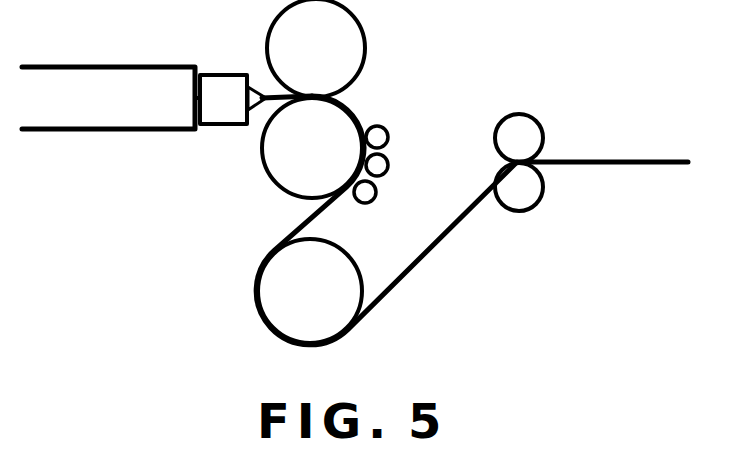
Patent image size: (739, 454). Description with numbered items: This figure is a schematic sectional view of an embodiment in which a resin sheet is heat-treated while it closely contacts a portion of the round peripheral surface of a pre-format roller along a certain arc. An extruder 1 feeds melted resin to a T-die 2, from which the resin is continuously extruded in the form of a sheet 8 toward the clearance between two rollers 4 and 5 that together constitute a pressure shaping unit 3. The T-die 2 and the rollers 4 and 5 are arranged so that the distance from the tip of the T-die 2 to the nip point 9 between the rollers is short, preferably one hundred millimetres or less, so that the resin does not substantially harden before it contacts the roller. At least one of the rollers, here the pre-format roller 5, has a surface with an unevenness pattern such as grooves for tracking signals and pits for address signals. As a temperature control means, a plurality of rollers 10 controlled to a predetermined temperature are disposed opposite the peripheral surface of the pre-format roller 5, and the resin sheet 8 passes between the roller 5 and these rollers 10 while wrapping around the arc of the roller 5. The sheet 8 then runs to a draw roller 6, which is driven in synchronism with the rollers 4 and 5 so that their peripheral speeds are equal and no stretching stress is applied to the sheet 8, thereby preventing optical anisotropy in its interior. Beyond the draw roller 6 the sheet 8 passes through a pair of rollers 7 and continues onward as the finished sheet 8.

The extruder 1 is at (98, 117).
The T-die 2 is at (258, 118).
The pressure shaping unit 3 is at (375, 42).
The roller 4 is at (345, 42).
The pre-format roller 5 is at (287, 177).
The draw roller 6 is at (337, 310).
The take-off rollers 7 is at (528, 135).
The resin sheet 8 is at (627, 167).
The nip point 9 is at (308, 95).
The rollers 10 is at (403, 130).